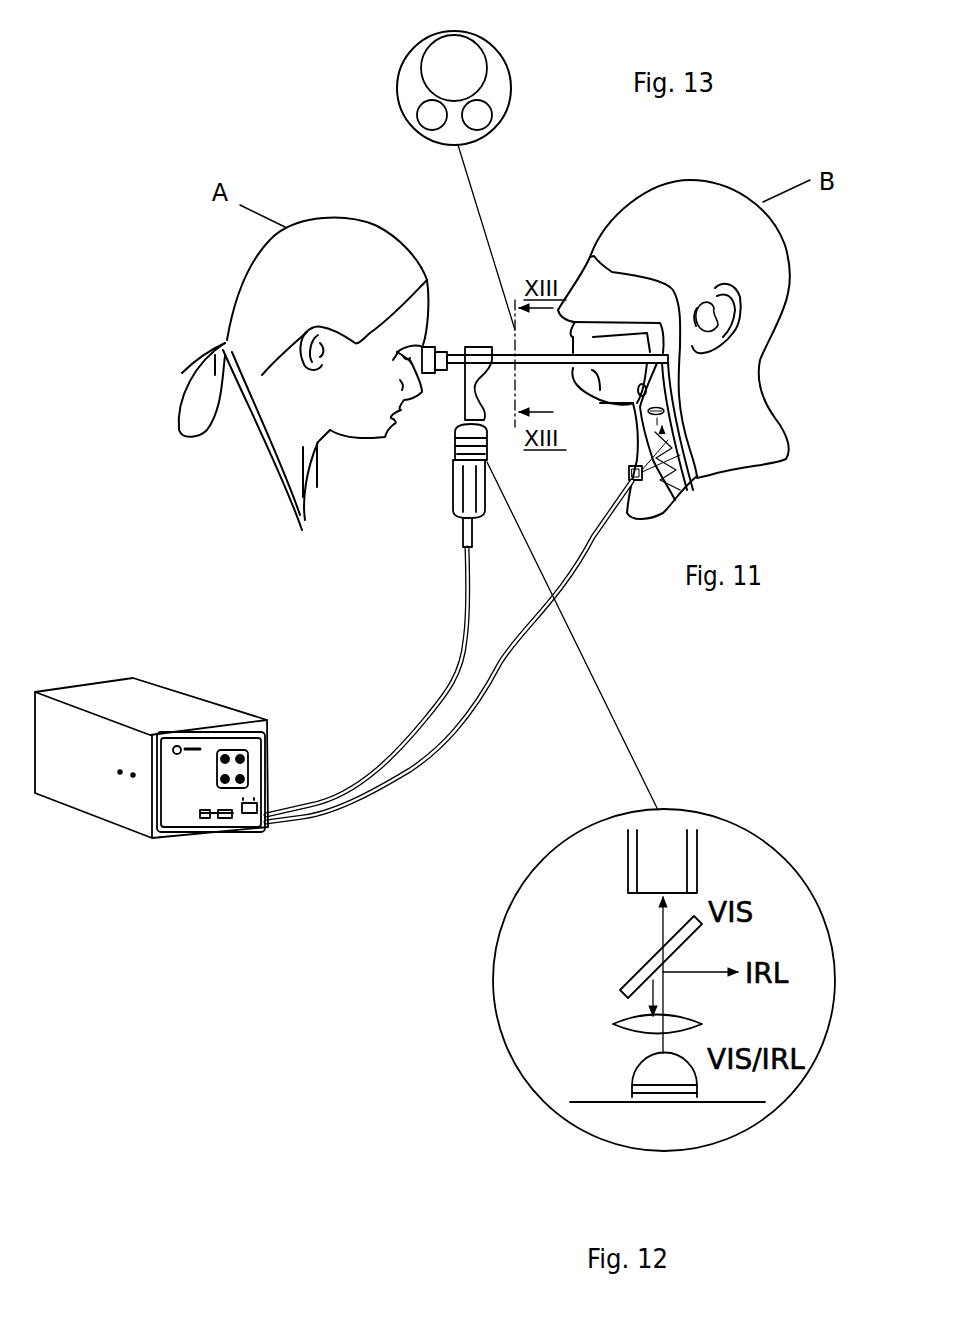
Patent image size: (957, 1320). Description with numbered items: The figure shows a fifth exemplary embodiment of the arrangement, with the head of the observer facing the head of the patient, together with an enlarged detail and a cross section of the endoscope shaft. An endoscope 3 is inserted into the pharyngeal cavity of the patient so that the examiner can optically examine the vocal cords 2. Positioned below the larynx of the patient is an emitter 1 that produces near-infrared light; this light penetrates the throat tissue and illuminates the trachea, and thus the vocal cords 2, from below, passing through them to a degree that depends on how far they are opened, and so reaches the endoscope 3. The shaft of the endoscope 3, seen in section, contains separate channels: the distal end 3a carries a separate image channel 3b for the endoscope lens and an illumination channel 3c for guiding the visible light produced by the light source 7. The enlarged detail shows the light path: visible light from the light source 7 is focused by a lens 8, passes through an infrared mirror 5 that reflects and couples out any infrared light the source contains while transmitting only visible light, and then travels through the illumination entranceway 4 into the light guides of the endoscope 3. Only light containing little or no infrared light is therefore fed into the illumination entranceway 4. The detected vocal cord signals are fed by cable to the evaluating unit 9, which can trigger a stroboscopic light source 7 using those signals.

In FIG. 11, the emitter for NIR light 1 is at (628, 472).
In FIG. 11, the vocal cords 2 is at (662, 410).
In FIG. 13, the endoscope 3 is at (408, 51).
In FIG. 11, the endoscope 3 is at (472, 347).
In FIG. 13, the distal end 3a is at (432, 118).
In FIG. 13, the image channel 3b is at (463, 60).
In FIG. 13, the illumination channel 3c is at (478, 118).
In FIG. 12, the illumination entranceway 4 is at (665, 842).
In FIG. 12, the IR mirror 5 is at (697, 937).
In FIG. 12, the light source 7 is at (670, 1075).
In FIG. 12, the lens 8 is at (637, 1025).
In FIG. 11, the evaluating unit 9 is at (92, 795).